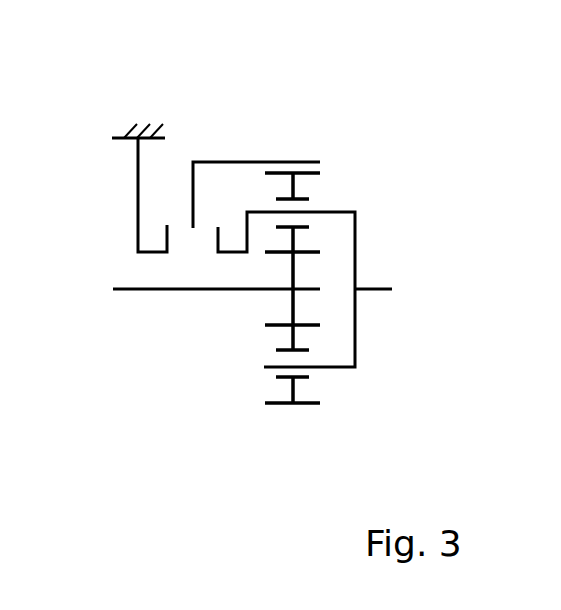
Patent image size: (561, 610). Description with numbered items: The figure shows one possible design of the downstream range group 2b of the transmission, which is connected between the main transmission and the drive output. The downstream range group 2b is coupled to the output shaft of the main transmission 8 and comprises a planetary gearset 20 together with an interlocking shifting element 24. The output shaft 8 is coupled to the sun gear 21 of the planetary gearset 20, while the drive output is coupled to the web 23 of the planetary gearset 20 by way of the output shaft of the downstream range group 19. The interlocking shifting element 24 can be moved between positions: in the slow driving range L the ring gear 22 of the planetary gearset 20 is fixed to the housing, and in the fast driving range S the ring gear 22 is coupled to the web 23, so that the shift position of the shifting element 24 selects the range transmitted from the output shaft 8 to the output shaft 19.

The output shaft of the main transmission 8 is at (145, 289).
The output shaft of the downstream range group 19 is at (373, 289).
The planetary gearset 20 is at (294, 154).
The sun gear 21 is at (293, 305).
The ring gear 22 is at (299, 403).
The web 23 is at (332, 212).
The shifting element 24 is at (188, 255).
The downstream range group 2b is at (199, 372).